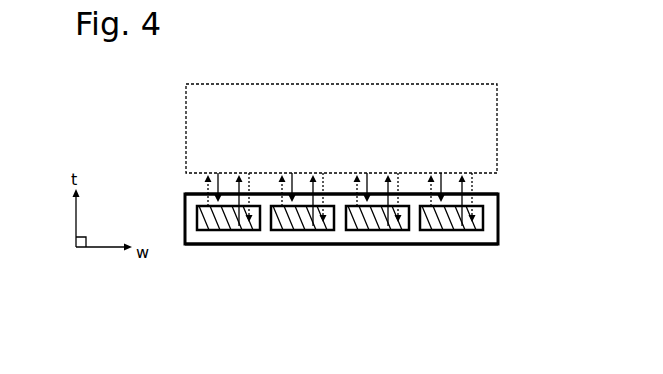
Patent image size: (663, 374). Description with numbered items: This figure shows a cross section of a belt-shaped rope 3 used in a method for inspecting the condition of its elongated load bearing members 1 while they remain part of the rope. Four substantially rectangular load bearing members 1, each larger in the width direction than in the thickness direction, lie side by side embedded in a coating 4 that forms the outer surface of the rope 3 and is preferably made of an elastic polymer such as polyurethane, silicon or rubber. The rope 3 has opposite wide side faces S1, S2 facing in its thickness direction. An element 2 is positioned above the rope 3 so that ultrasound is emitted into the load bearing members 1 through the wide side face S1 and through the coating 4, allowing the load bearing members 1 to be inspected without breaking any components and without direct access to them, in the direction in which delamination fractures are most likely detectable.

The load bearing member 1 is at (233, 230).
The object / component 2 is at (357, 141).
The rope 3 is at (379, 205).
The coating 4 is at (258, 240).
The wide side face S1 is at (483, 194).
The wide side face S2 is at (338, 245).